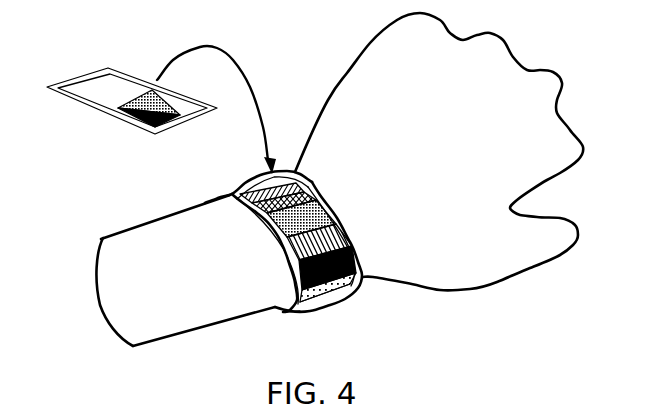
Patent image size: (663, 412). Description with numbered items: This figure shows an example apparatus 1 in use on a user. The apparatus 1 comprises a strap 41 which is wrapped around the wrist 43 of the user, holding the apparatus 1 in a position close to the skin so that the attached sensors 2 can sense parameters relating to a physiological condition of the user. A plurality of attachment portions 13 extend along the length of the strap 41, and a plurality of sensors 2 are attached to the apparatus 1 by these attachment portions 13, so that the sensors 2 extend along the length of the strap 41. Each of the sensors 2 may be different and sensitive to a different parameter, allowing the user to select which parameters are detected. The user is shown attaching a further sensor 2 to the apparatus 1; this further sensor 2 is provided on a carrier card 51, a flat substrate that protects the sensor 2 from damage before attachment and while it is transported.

The apparatus 1 is at (362, 278).
The sensors 2 is at (117, 70).
The attachment portions 13 is at (283, 172).
The strap 41 is at (280, 312).
The wrist 43 is at (170, 241).
The carrier card 51 is at (173, 127).